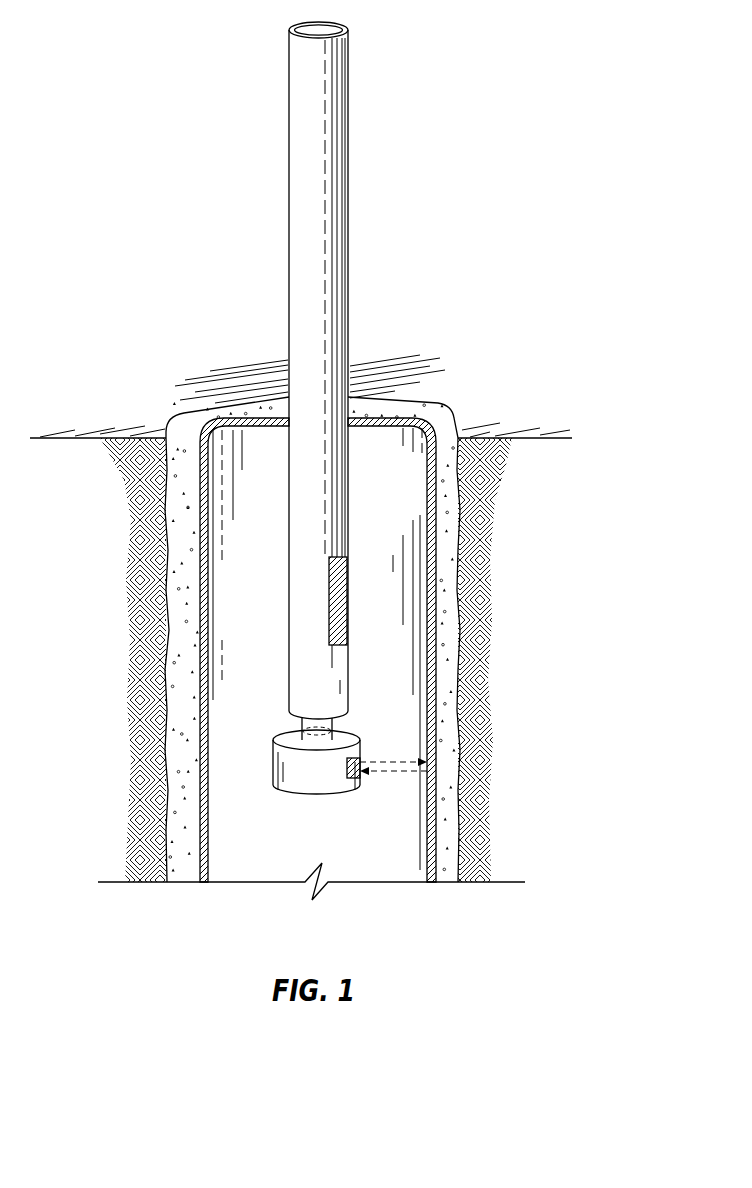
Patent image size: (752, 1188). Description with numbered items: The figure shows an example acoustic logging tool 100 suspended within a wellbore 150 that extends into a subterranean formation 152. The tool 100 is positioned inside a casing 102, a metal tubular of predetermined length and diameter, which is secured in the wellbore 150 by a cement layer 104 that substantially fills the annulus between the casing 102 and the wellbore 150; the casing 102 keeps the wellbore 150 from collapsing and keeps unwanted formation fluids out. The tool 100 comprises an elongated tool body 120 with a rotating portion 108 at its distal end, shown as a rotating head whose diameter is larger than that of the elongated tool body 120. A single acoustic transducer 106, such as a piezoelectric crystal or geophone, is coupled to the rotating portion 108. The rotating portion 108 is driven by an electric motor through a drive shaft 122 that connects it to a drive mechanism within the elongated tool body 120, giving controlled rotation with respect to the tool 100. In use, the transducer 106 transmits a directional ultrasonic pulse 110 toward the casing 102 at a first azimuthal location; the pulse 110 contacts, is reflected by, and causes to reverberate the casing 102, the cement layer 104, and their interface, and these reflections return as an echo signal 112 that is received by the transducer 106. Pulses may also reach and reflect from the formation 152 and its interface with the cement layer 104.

The acoustic logging tool 100 is at (392, 438).
The casing 102 is at (262, 420).
The cement layer 104 is at (447, 537).
The acoustic transducer 106 is at (287, 781).
The rotating portion 108 is at (345, 771).
The directional ultrasonic pulse 110 is at (403, 760).
The echo signal 112 is at (398, 774).
The elongated tool body 120 is at (348, 236).
The drive shaft 122 is at (299, 735).
The wellbore 150 is at (186, 606).
The subterranean formation 152 is at (482, 612).